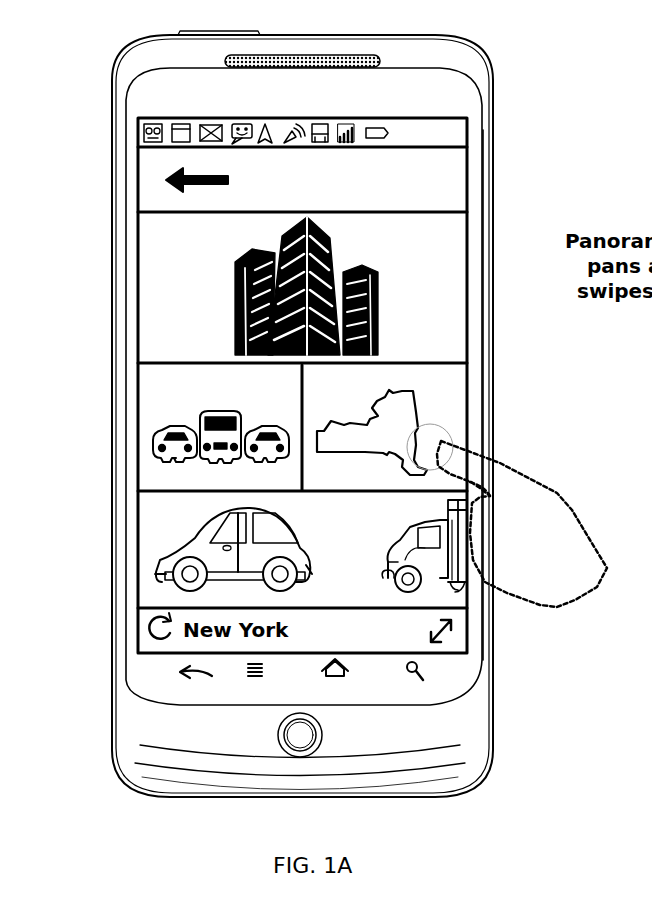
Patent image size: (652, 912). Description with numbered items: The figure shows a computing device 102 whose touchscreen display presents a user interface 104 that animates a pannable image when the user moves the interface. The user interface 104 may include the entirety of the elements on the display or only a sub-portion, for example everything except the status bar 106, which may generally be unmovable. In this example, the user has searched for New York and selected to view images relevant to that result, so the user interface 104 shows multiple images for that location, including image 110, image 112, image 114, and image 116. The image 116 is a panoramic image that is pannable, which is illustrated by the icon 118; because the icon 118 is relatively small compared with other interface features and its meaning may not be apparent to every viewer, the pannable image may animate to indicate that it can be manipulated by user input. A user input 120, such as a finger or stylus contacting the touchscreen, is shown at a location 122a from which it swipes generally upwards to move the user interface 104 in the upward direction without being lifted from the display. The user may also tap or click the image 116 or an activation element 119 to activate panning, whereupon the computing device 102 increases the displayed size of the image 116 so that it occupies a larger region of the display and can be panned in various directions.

The computing device 102 is at (478, 57).
The user interface 104 is at (467, 167).
The status bar 106 is at (467, 127).
The image 110 is at (467, 248).
The image 112 is at (305, 404).
The image 114 is at (467, 392).
The panoramic image 116 is at (467, 603).
The icon 118 is at (157, 622).
The activation element 119 is at (435, 628).
The user input 120 is at (560, 495).
The location 122a is at (452, 431).